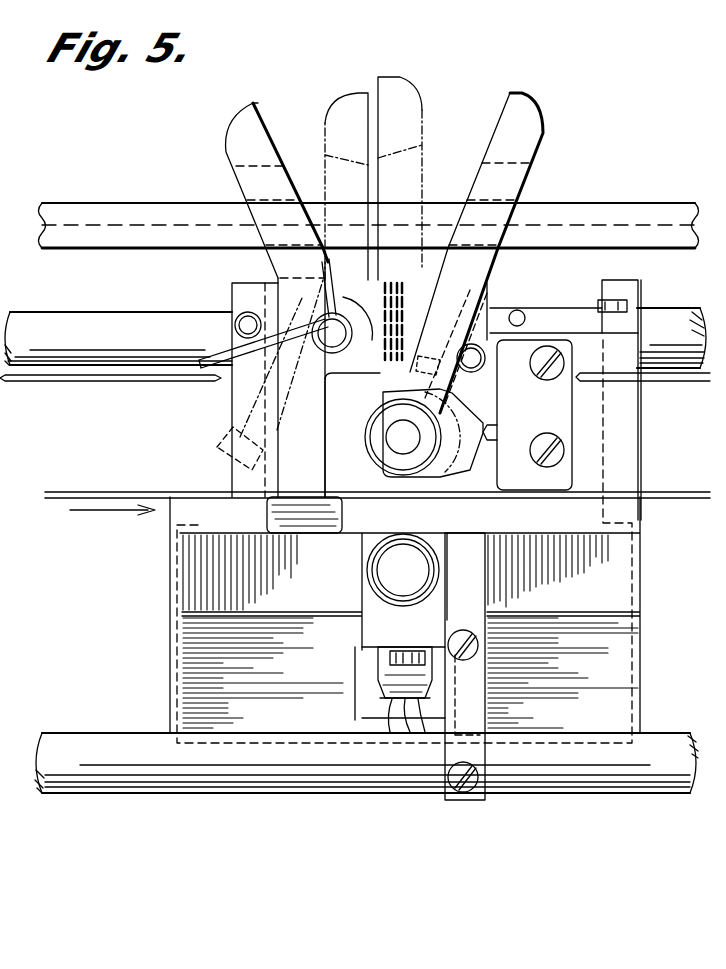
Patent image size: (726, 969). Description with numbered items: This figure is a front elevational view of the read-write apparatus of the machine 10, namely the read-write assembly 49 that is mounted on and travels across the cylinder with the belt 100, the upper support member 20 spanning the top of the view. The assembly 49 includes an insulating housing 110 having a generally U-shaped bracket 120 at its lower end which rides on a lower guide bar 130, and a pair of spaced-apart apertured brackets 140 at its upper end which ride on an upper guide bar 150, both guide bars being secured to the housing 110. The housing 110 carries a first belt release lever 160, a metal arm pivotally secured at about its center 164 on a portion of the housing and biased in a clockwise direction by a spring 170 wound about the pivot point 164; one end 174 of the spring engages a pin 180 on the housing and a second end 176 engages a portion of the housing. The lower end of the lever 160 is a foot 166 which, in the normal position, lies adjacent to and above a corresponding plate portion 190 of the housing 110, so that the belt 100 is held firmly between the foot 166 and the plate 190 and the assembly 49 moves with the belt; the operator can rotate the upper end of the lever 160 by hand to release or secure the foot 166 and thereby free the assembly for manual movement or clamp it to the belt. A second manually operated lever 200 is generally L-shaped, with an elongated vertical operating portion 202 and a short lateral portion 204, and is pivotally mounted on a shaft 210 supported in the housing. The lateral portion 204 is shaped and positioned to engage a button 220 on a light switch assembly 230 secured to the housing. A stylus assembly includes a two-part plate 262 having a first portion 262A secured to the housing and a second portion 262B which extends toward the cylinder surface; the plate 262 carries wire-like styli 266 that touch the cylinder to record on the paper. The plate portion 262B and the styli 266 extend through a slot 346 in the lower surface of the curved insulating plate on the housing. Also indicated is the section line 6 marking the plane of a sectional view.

The section line 6- 6 is at (387, 33).
The machine 10 is at (164, 170).
The upper support bar 20 is at (638, 200).
The read-write assembly 49 is at (214, 301).
The belt 100 is at (63, 490).
The insulating housing 110 is at (248, 283).
The U-shaped bracket 120 is at (172, 667).
The lower guide bar 130 is at (638, 790).
The apertured brackets 140 is at (232, 393).
The upper guide bar 150 is at (76, 298).
The first belt release lever 160 is at (265, 122).
The center pivot point 164 is at (408, 355).
The foot 166 is at (277, 480).
The spring 170 is at (322, 367).
The spring end 174 is at (237, 369).
The second spring end 176 is at (332, 268).
The pin 180 is at (242, 325).
The plate portion 190 is at (305, 535).
The second manually operated lever 200 is at (480, 95).
The vertical operating portion 202 is at (482, 272).
The lateral portion 204 is at (470, 475).
The shaft 210 is at (400, 438).
The button 220 is at (488, 433).
The light switch assembly 230 is at (575, 488).
The two-part plate 262 is at (366, 680).
The first plate portion 262A is at (400, 648).
The second plate portion 262B is at (372, 700).
The styli 266 is at (408, 730).
The slot 346 is at (378, 718).